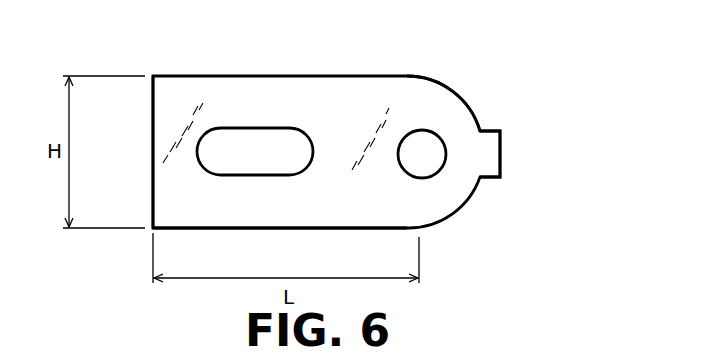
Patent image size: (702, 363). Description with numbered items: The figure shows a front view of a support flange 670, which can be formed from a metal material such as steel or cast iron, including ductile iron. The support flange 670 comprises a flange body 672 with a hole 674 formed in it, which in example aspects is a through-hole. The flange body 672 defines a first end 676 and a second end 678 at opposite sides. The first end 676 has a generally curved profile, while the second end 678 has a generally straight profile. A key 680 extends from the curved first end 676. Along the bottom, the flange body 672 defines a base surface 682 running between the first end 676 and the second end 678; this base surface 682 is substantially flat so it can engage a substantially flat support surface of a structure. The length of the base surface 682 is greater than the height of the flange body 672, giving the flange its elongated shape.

The support flange 670 is at (255, 62).
The flange body 672 is at (354, 118).
The hole 674 is at (425, 153).
The first end 676 is at (466, 113).
The second end 678 is at (152, 148).
The key 680 is at (503, 160).
The base surface 682 is at (298, 233).